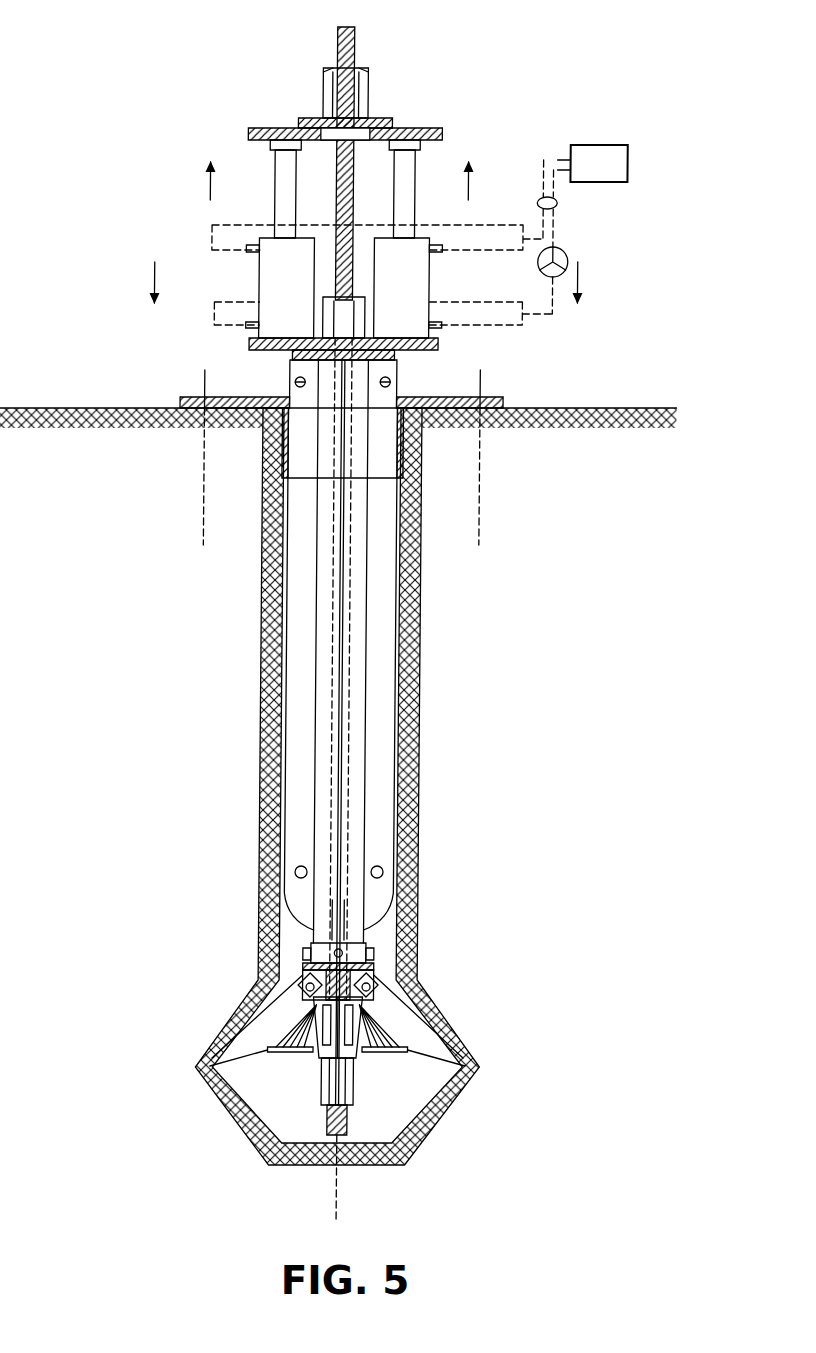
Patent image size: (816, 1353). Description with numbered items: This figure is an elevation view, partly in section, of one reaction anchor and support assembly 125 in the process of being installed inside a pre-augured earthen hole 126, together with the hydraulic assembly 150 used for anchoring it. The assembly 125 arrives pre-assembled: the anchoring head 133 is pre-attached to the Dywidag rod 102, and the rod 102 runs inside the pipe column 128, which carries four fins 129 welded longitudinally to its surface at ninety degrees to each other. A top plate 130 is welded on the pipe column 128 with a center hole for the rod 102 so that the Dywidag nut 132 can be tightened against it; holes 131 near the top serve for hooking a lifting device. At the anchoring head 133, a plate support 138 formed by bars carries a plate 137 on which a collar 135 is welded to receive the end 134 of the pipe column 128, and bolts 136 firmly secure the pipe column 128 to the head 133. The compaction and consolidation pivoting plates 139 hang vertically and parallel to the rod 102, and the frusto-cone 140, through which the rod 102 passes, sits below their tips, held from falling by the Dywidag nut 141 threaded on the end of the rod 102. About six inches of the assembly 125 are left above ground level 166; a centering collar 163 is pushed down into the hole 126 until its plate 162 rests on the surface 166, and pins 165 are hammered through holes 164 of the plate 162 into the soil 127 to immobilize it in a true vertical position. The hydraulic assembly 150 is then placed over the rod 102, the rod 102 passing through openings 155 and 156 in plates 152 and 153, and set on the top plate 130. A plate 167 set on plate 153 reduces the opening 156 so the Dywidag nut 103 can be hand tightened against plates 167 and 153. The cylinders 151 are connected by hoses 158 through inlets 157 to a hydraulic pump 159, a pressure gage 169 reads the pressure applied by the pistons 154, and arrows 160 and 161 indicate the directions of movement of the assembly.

The Dywidag rod 102 is at (356, 46).
The Dywidag nut 103 is at (370, 82).
The plate 167 is at (384, 120).
The plate 153 is at (420, 129).
The opening 156 is at (360, 140).
The pistons 154 is at (276, 170).
The upward movement arrow 160 is at (212, 185).
The downward movement arrow 161 is at (157, 280).
The hydraulic pump 159 is at (612, 182).
The hoses 158 is at (560, 204).
The pressure gage 169 is at (572, 262).
The inlets 157 is at (250, 324).
The cylinders 151 is at (303, 285).
The plate 152 is at (254, 340).
The Dywidag nut 132 is at (395, 345).
The top plate 130 is at (400, 357).
The holes 131 is at (395, 384).
The opening 155 is at (312, 368).
The plate 162 is at (190, 400).
The ground level 166 is at (642, 407).
The soil 127 is at (615, 420).
The centering collar 163 is at (412, 462).
The holes 164 is at (208, 425).
The pins 165 is at (207, 375).
The earthen hole 126 is at (426, 620).
The pipe column 128 is at (400, 770).
The fins 129 is at (295, 681).
The end 134 is at (292, 886).
The collar 135 is at (373, 930).
The bolts 136 is at (318, 955).
The plate 137 is at (312, 968).
The plate support 138 is at (386, 976).
The compaction and consolidation pivoting plates 139 is at (250, 1040).
The frusto-cone 140 is at (370, 1046).
The Dywidag nut 141 is at (332, 1076).
The hydraulic assembly 150 is at (552, 84).
The reaction anchor and support assembly 125 is at (582, 630).
The anchoring head 133 is at (532, 981).